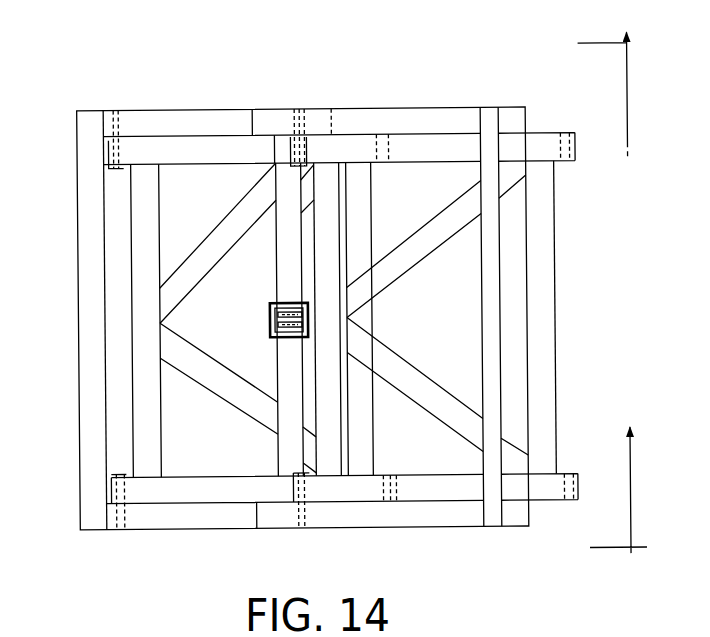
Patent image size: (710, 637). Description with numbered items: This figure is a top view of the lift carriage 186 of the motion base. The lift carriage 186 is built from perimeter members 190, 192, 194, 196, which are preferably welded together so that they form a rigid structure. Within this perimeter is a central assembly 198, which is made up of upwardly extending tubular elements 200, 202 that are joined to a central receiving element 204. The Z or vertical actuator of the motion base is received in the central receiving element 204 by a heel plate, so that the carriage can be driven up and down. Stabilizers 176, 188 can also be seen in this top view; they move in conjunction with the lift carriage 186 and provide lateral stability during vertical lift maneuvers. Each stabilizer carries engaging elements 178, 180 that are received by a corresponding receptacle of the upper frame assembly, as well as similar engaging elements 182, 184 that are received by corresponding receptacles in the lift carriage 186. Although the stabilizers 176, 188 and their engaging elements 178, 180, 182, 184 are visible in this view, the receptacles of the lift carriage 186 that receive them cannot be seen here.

The stabilizer 176 is at (126, 403).
The engaging element 178 is at (291, 148).
The engaging element 180 is at (110, 478).
The engaging element 182 is at (114, 138).
The engaging element 184 is at (119, 532).
The lift carriage 186 is at (624, 235).
The stabilizer 188 is at (567, 414).
The perimeter member 190 is at (83, 302).
The perimeter member 192 is at (380, 121).
The perimeter member 194 is at (482, 297).
The perimeter member 196 is at (377, 519).
The central assembly 198 is at (253, 323).
The tubular element 200 is at (278, 428).
The tubular element 202 is at (278, 193).
The central receiving element 204 is at (287, 336).